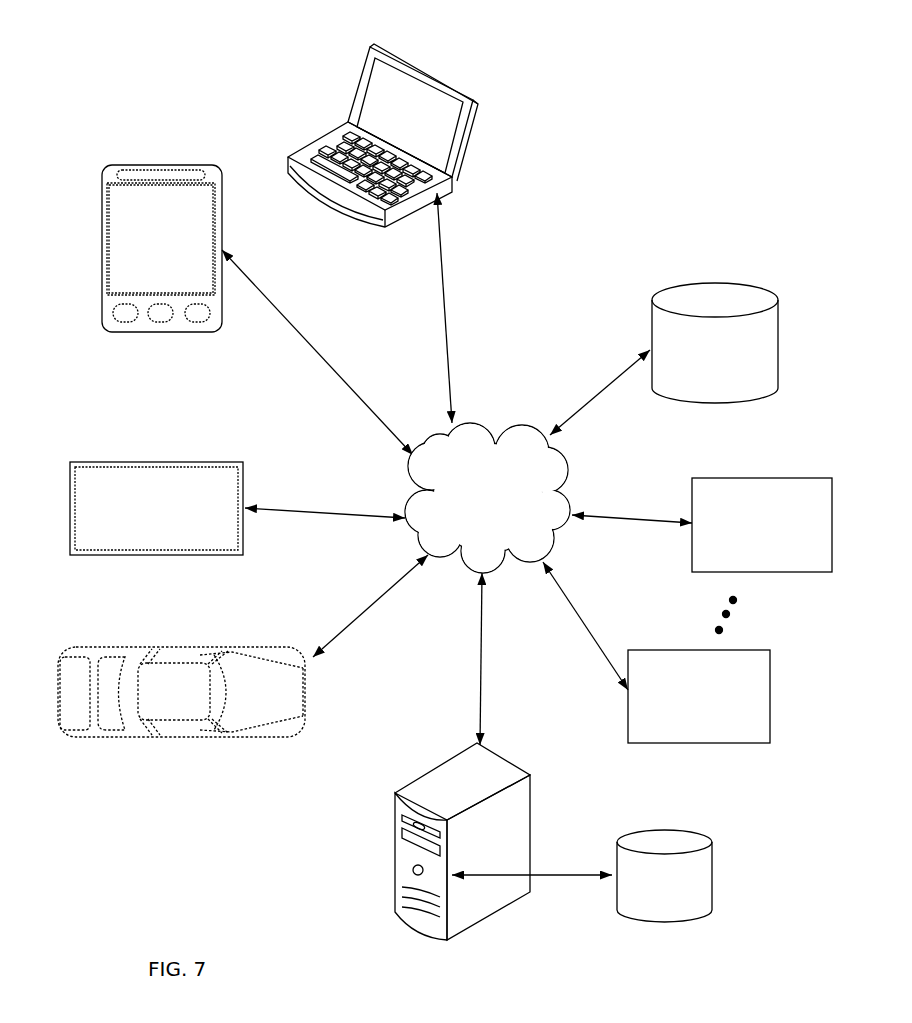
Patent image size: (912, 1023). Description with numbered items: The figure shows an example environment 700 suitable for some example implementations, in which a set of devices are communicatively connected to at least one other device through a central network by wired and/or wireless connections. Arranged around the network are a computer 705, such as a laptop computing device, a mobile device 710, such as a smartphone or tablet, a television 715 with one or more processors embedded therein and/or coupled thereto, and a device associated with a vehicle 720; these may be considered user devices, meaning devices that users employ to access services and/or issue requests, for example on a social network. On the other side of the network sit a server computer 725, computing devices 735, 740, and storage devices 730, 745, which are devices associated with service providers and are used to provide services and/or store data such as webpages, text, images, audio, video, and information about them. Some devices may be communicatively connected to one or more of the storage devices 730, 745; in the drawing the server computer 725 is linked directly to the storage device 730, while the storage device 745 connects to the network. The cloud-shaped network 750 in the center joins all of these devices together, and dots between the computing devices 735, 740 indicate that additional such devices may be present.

The environment 700 is at (178, 46).
The computer 705 is at (383, 233).
The mobile device 710 is at (257, 310).
The television 715 is at (237, 508).
The vehicle 720 is at (243, 646).
The server computer 725 is at (503, 756).
The storage device 730 is at (664, 876).
The computing device 735 is at (656, 652).
The computing device 740 is at (702, 525).
The storage device 745 is at (664, 359).
The network 750 is at (487, 498).